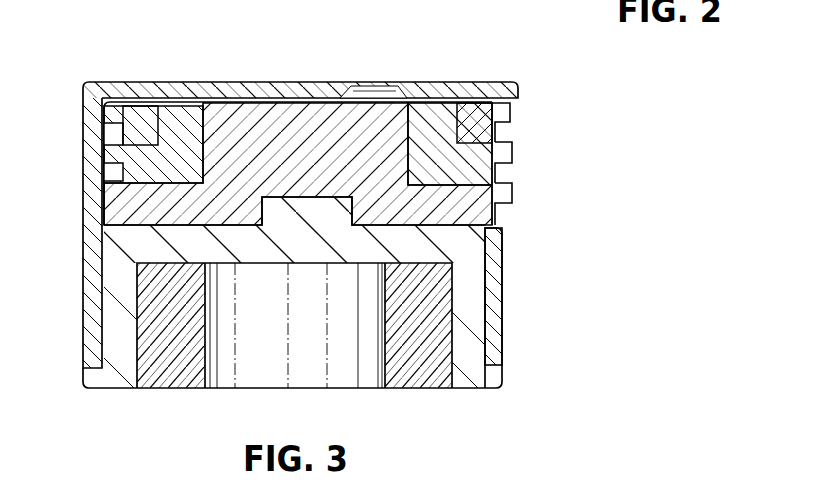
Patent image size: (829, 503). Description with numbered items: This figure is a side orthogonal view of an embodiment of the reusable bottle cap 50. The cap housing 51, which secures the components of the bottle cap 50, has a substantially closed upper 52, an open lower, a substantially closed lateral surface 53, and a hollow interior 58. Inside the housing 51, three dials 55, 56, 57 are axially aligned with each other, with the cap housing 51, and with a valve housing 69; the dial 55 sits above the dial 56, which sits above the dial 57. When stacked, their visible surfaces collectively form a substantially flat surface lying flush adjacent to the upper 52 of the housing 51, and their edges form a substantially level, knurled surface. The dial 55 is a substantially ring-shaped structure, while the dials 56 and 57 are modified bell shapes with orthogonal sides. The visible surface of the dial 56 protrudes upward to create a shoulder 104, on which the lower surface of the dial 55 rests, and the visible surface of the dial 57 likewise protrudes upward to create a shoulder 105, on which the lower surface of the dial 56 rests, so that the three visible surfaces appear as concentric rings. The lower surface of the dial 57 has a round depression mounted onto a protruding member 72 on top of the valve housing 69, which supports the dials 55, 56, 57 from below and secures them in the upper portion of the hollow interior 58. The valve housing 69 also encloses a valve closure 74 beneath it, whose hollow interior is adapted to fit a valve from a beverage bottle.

The reusable bottle cap 50 is at (626, 263).
The cap housing 51 is at (82, 126).
The substantially closed upper 52 is at (164, 82).
The substantially closed lateral surface 53 is at (82, 217).
The dial 55 is at (509, 120).
The dial 56 is at (509, 153).
The dial 57 is at (507, 195).
The hollow interior 58 is at (318, 332).
The valve housing 69 is at (482, 287).
The protruding member 72 is at (307, 195).
The valve closure 74 is at (433, 338).
The shoulder 104 is at (150, 142).
The shoulder 105 is at (173, 185).